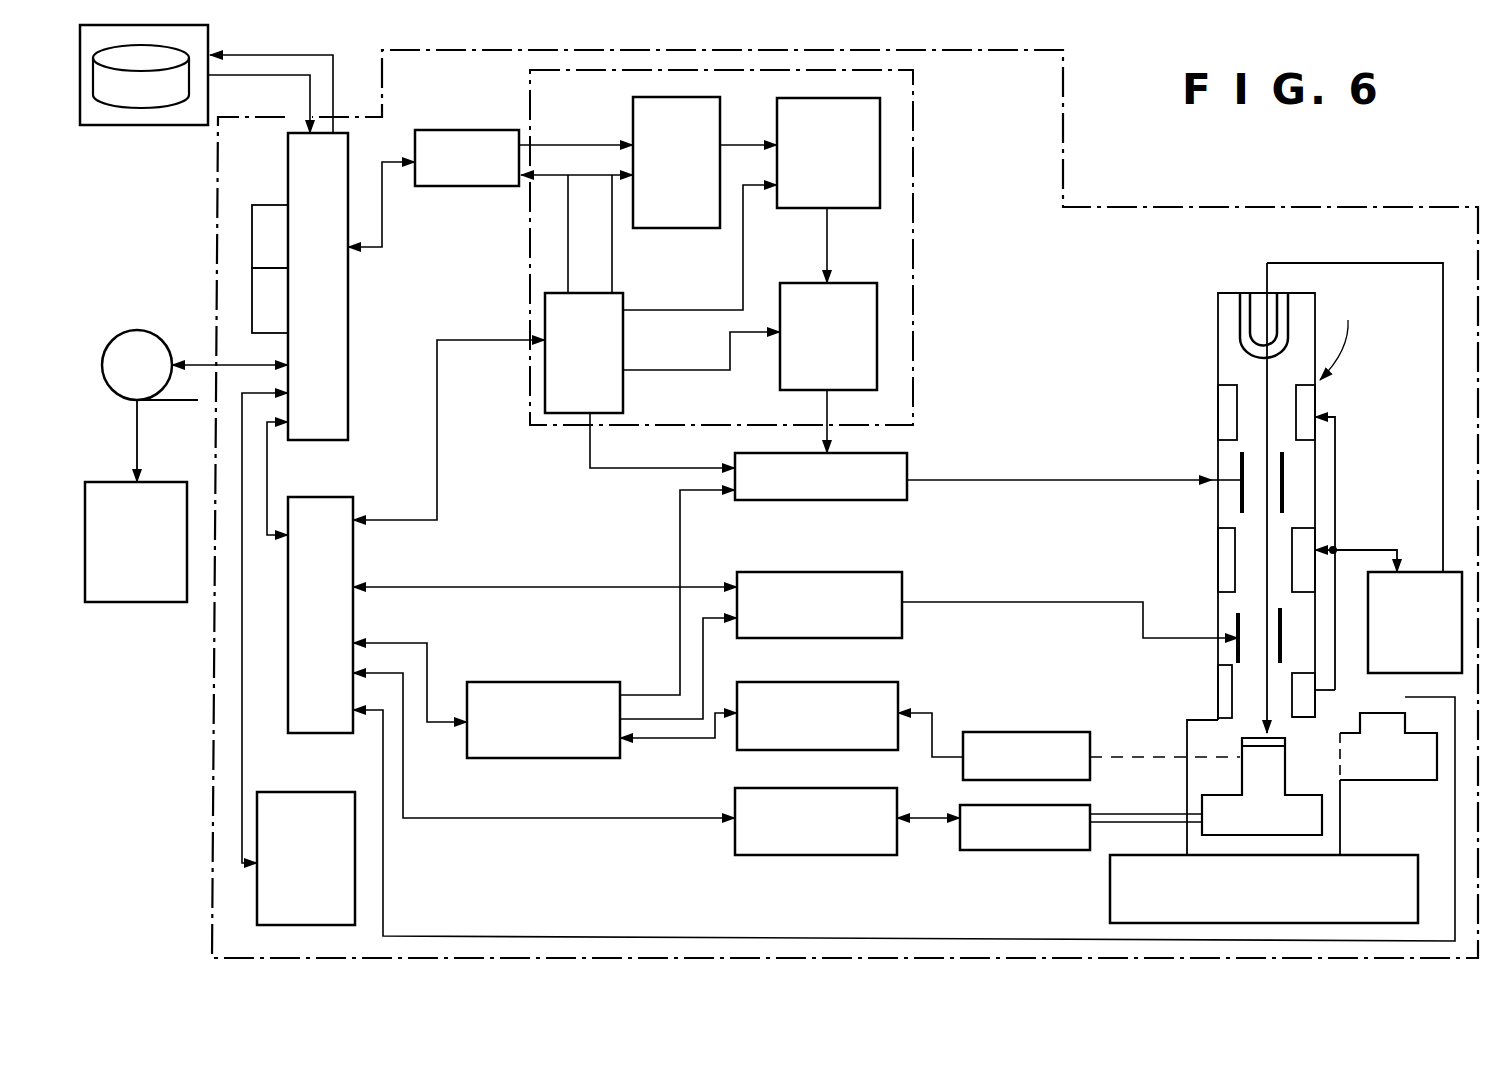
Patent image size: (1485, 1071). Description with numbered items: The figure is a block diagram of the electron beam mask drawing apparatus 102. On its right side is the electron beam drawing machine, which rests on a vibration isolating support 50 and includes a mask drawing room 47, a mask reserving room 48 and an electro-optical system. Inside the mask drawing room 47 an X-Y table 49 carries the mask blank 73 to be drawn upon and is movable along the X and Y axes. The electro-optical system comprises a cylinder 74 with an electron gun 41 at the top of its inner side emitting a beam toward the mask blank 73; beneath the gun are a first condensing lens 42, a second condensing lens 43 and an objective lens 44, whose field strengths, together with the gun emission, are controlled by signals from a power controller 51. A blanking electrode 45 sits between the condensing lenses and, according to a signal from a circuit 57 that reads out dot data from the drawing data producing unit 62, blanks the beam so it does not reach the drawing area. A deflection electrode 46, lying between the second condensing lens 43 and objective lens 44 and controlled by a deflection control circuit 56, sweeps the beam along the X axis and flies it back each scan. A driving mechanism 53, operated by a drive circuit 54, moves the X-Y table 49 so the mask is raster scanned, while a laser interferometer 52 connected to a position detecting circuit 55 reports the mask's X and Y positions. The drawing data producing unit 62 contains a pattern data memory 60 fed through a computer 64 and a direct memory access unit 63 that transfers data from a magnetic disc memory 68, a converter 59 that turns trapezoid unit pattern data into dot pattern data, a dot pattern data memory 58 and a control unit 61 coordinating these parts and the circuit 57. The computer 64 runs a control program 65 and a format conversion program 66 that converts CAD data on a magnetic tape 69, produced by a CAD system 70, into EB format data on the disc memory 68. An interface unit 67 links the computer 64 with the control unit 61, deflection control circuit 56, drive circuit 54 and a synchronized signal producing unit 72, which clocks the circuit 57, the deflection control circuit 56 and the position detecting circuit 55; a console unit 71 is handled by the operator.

The electron gun 41 is at (1228, 300).
The first condensing lens 42 is at (1218, 385).
The second condensing lens 43 is at (1218, 528).
The objective lens 44 is at (1218, 672).
The blanking electrode 45 is at (1284, 480).
The deflection electrode 46 is at (1238, 625).
The mask drawing room 47 is at (1308, 737).
The mask reserving room 48 is at (1420, 733).
The X-Y table 49 is at (1322, 812).
The vibration isolating support 50 is at (1110, 892).
The power controller 51 is at (1388, 609).
The laser interferometer 52 is at (1022, 732).
The driving mechanism 53 is at (1008, 850).
The drive circuit 54 is at (802, 855).
The position detecting circuit 55 is at (808, 750).
The deflection control circuit 56 is at (840, 638).
The dot data read-out circuit 57 is at (850, 500).
The dot pattern data memory 58 is at (878, 272).
The converter 59 is at (777, 115).
The pattern data memory 60 is at (633, 106).
The control unit 61 is at (620, 300).
The drawing data producing unit 62 is at (918, 238).
The direct memory access unit 63 is at (480, 130).
The computer 64 is at (350, 318).
The control program 65 is at (270, 205).
The format conversion program 66 is at (252, 338).
The interface unit 67 is at (350, 510).
The magnetic disc memory 68 is at (215, 40).
The magnetic tape 69 is at (135, 330).
The CAD system 70 is at (155, 605).
The console unit 71 is at (328, 770).
The synchronized signal producing unit 72 is at (575, 660).
The mask blank 73 is at (1245, 737).
The cylinder 74 is at (1218, 460).
The mask drawing apparatus 102 is at (212, 217).